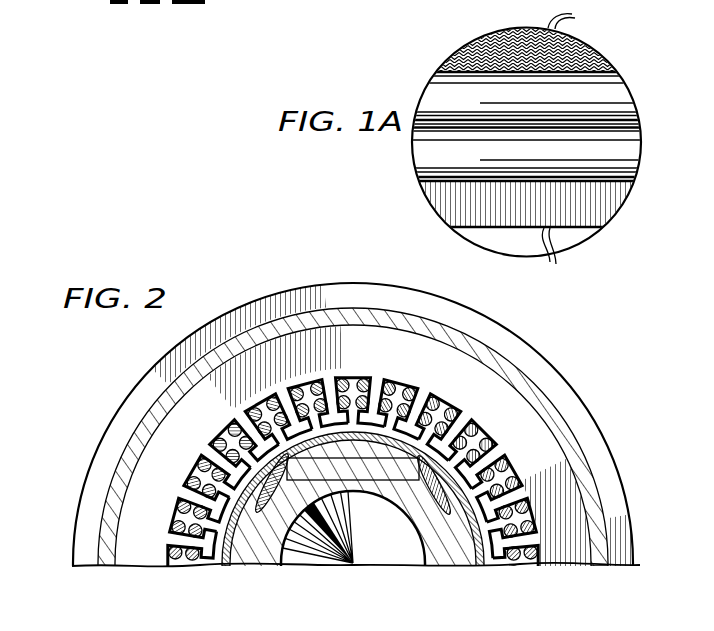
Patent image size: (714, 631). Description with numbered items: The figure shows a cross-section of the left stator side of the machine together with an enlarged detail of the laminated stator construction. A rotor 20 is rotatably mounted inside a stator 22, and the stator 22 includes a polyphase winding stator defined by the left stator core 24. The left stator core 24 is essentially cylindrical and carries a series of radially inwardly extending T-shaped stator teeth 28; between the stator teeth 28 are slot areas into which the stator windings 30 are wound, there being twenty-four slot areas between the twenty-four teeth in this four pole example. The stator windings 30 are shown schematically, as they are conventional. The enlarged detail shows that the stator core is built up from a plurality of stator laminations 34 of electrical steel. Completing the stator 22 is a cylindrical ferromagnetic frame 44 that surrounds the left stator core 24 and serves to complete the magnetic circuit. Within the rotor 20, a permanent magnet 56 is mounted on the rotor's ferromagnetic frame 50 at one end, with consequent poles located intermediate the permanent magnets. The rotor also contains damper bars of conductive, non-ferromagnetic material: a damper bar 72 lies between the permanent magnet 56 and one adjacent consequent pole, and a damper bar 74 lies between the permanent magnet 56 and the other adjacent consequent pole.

In FIG. 2, the rotor 20 is at (370, 573).
In FIG. 2, the stator 22 is at (353, 428).
In FIG. 1A, the left stator core 24 is at (451, 45).
In FIG. 2, the left stator core 24 is at (398, 448).
In FIG. 2, the stator teeth 28 is at (353, 499).
In FIG. 1A, the stator windings 30 is at (627, 148).
In FIG. 2, the stator windings 30 is at (354, 485).
In FIG. 1A, the stator laminations 34 is at (569, 142).
In FIG. 2, the ferromagnetic frame 44 is at (353, 437).
In FIG. 2, the ferromagnetic frame 50 is at (353, 528).
In FIG. 2, the permanent magnet 56 is at (353, 503).
In FIG. 2, the damper bar 72 is at (272, 483).
In FIG. 2, the damper bar 74 is at (434, 485).